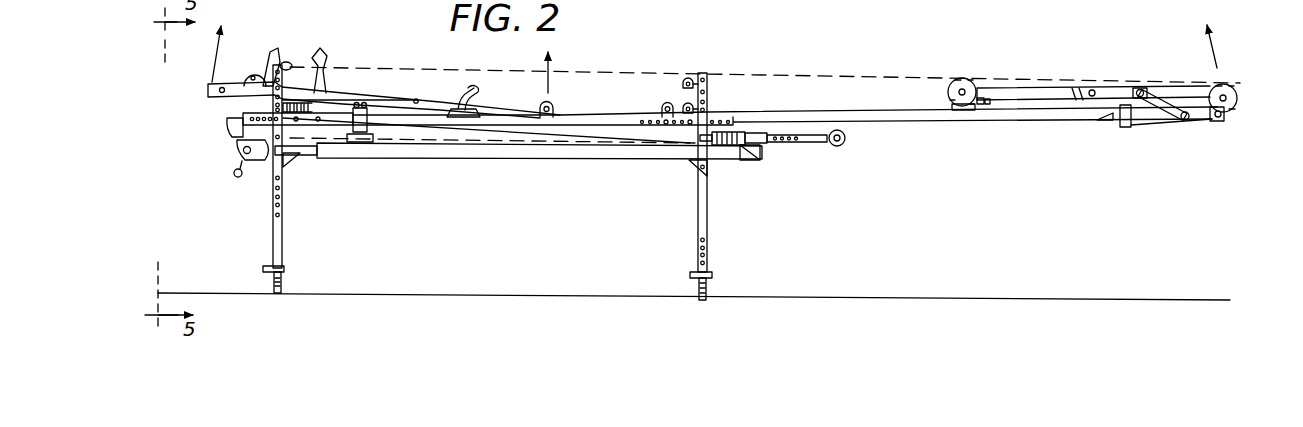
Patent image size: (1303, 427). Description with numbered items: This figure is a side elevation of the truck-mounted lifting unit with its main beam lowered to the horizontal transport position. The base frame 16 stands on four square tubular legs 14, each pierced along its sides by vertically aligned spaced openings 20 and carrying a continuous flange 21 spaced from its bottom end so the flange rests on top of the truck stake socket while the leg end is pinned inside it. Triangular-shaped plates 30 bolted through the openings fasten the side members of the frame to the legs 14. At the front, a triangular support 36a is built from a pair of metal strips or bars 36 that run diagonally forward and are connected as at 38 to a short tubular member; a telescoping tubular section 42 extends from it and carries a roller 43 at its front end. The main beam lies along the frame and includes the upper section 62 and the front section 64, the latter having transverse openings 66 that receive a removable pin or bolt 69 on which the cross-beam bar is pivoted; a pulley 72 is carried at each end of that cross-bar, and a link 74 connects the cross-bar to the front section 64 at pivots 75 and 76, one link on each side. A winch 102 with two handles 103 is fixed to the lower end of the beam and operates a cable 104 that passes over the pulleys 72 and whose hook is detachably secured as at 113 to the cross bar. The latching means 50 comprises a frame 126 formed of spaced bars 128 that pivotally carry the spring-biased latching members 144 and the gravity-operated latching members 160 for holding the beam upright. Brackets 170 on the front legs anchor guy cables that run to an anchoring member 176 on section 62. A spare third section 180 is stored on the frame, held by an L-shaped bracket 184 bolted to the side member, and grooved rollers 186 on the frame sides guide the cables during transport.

The tubular legs 14 is at (272, 229).
The base frame 16 is at (262, 198).
The spaced openings 20 is at (281, 207).
The flange 21 is at (286, 268).
The triangular-shaped plates 30 is at (292, 160).
The metal strips or bars 36 is at (751, 138).
The triangular support 36a is at (742, 132).
The connection of bar forward ends 38 is at (770, 146).
The tubular section 42 is at (818, 144).
The roller 43 is at (841, 143).
The latching means 50 is at (346, 89).
The upper section 62 is at (915, 120).
The front section 64 is at (1153, 120).
The transverse openings 66 is at (1227, 117).
The removable pin or bolt 69 is at (1218, 122).
The pulley 72 is at (971, 80).
The link 74 is at (1160, 101).
The link pivot connection 75 is at (1139, 89).
The link pivot connection 76 is at (1185, 122).
The winch 102 is at (240, 153).
The handles 103 is at (234, 173).
The cable 104 is at (853, 73).
The hook attachment point 113 is at (981, 105).
The frame 126 is at (416, 97).
The spaced bars 128 is at (419, 103).
The latching members 144 is at (266, 56).
The latching members 160 is at (327, 53).
The brackets 170 is at (698, 77).
The anchoring member 176 is at (1111, 128).
The third section 180 is at (523, 162).
The L-shaped bracket 184 is at (368, 120).
The grooved rollers 186 is at (352, 143).